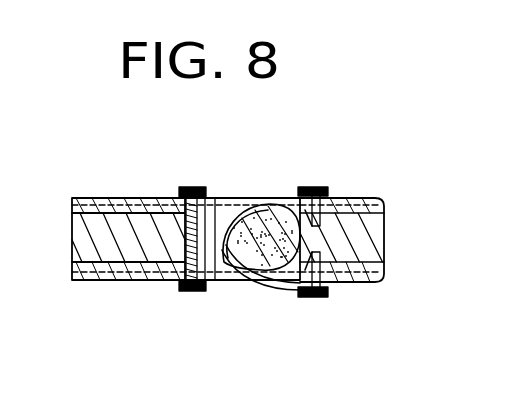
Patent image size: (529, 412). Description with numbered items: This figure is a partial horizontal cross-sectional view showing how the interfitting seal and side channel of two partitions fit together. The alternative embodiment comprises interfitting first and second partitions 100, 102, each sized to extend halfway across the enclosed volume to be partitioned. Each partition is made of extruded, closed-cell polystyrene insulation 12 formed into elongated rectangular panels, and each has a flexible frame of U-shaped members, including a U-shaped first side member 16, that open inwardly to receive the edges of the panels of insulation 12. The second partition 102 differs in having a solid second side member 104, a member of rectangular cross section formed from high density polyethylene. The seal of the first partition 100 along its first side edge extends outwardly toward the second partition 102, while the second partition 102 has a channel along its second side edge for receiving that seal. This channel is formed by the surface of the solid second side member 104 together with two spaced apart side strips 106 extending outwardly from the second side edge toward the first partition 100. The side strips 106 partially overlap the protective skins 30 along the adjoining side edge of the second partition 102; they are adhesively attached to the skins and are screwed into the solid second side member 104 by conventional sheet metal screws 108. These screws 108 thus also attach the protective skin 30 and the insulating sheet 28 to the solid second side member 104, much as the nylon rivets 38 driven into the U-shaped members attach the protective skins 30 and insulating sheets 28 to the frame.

The first partition 100 is at (330, 121).
The second partition 102 is at (131, 128).
The insulation 12 is at (118, 250).
The first side member 16 is at (340, 196).
The insulating sheet 28 is at (72, 212).
The protective skin 30 is at (75, 198).
The nylon rivet 38 is at (305, 187).
The solid second side member 104 is at (160, 278).
The side strip 106 is at (243, 196).
The sheet metal screw 108 is at (186, 187).